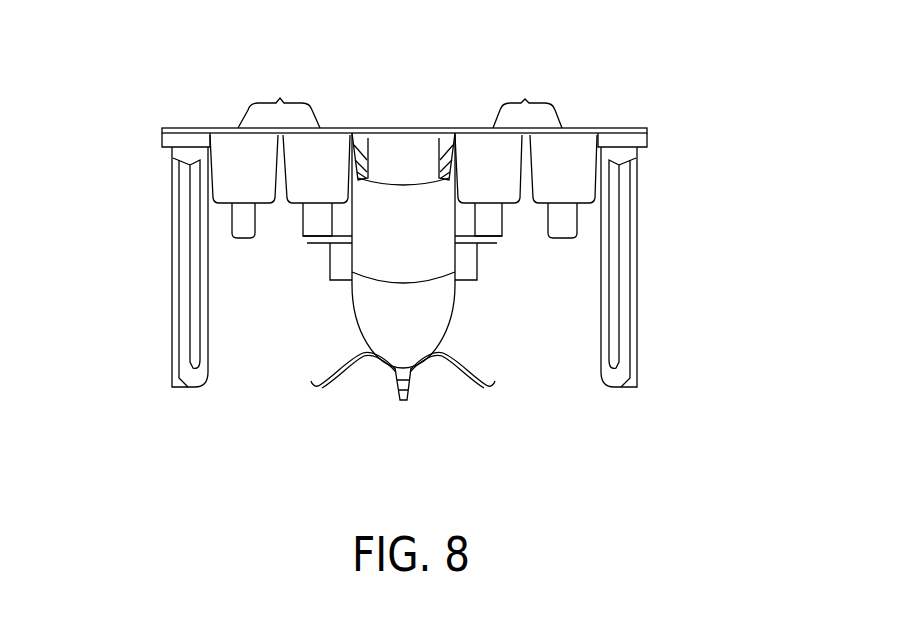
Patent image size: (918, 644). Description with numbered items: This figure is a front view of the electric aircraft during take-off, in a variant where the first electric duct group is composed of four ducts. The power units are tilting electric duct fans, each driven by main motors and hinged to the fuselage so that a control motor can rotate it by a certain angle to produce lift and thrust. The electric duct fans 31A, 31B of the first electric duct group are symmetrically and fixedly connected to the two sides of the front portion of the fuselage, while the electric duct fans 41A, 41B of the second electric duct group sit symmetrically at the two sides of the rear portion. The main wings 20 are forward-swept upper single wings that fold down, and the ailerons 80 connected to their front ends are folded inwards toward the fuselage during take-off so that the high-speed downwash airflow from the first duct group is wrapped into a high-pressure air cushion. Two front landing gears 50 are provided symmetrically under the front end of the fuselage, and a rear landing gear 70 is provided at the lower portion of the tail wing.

The main wing 20 is at (175, 340).
The aileron 80 is at (187, 238).
The electric duct fan 31A is at (280, 98).
The electric duct fan 31B is at (525, 92).
The electric duct fan 41A is at (343, 237).
The electric duct fan 41B is at (466, 228).
The front landing gear 50 is at (306, 388).
The rear landing gear 70 is at (403, 403).